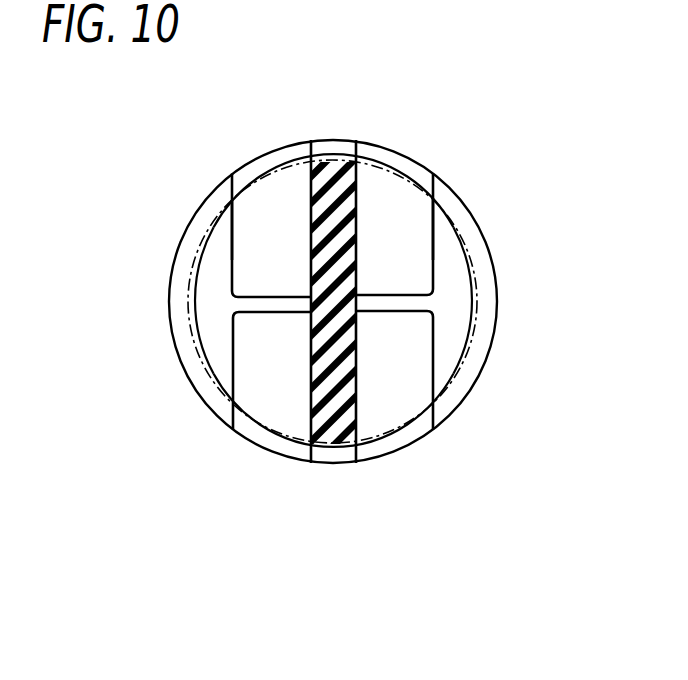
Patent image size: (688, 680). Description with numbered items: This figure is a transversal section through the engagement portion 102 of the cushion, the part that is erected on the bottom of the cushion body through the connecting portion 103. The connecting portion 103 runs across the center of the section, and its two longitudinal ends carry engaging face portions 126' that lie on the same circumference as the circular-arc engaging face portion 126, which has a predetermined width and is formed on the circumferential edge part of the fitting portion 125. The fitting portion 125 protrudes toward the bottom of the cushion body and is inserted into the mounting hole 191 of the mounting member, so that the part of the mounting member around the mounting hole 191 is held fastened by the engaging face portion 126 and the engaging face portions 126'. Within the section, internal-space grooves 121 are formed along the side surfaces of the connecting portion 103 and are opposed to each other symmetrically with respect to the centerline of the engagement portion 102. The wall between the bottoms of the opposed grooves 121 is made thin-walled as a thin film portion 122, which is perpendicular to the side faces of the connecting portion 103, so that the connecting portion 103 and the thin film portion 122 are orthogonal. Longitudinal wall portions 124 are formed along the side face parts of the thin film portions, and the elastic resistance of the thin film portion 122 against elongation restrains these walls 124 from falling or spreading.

The engagement portion 102 is at (465, 405).
The connecting portion 103 is at (317, 427).
The internal-space groove 121 is at (250, 383).
The thin film portion 122 is at (270, 297).
The longitudinal wall portion 124 is at (197, 213).
The fitting portion 125 is at (212, 287).
The engaging face portion 126 is at (339, 314).
The engaging face portion 126' is at (333, 304).
The mounting hole 191 is at (477, 345).